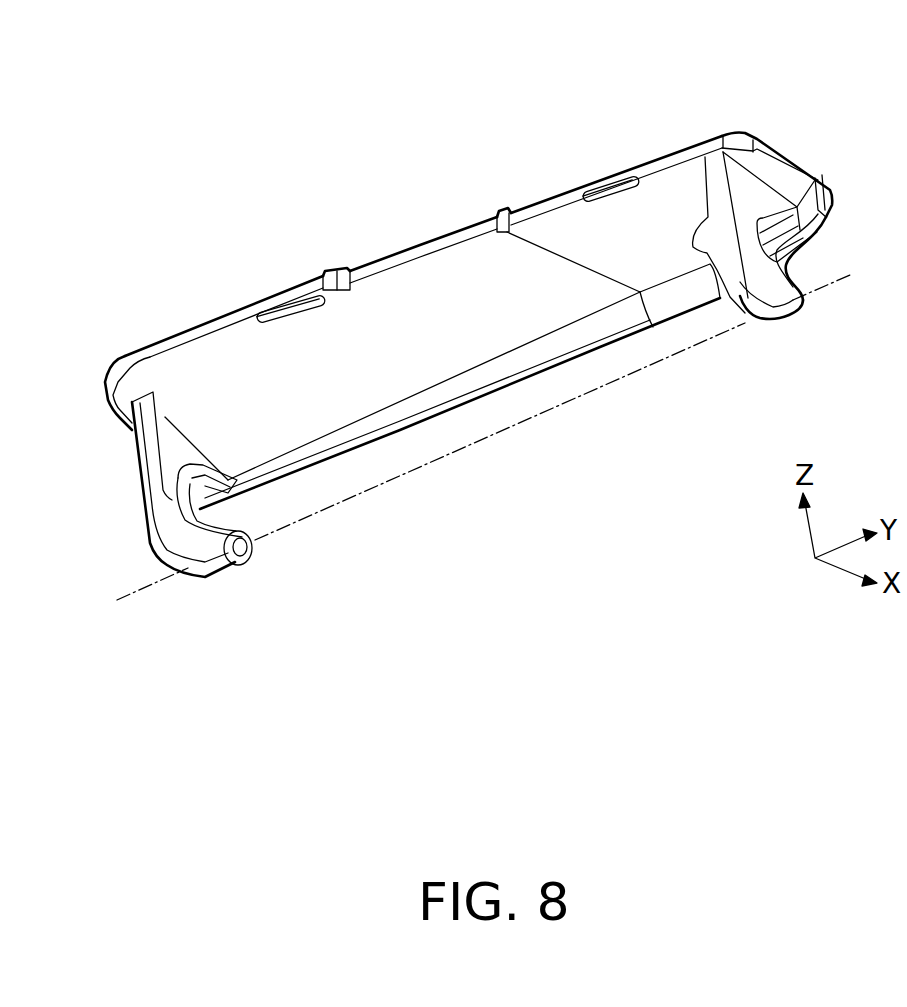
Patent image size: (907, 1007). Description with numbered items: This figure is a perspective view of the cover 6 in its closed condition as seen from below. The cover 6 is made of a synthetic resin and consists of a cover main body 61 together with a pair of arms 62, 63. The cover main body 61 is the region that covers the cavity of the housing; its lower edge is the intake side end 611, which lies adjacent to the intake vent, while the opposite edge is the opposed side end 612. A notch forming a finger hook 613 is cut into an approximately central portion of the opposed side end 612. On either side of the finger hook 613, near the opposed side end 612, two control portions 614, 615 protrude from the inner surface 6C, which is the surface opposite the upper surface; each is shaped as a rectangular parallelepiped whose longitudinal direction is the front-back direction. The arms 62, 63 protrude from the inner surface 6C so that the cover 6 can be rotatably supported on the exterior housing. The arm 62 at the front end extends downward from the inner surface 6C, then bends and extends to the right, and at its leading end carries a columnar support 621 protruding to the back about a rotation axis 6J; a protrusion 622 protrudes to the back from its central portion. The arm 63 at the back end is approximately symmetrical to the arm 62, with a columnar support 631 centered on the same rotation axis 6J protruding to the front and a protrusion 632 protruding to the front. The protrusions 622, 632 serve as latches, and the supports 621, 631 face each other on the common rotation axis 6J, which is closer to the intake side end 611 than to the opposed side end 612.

The cover 6 is at (752, 88).
The cover main body 61 is at (200, 370).
The intake side end 611 is at (483, 407).
The opposed side end 612 is at (540, 185).
The finger hook 613 is at (402, 260).
The control portion 614 is at (613, 198).
The control portion 615 is at (293, 320).
The arm 62 is at (747, 248).
The columnar support 621 is at (757, 328).
The protrusion 622 is at (700, 230).
The arm 63 is at (147, 459).
The columnar support 631 is at (237, 567).
The protrusion 632 is at (172, 507).
The inner surface 6C is at (368, 378).
The rotation axis 6J is at (607, 383).